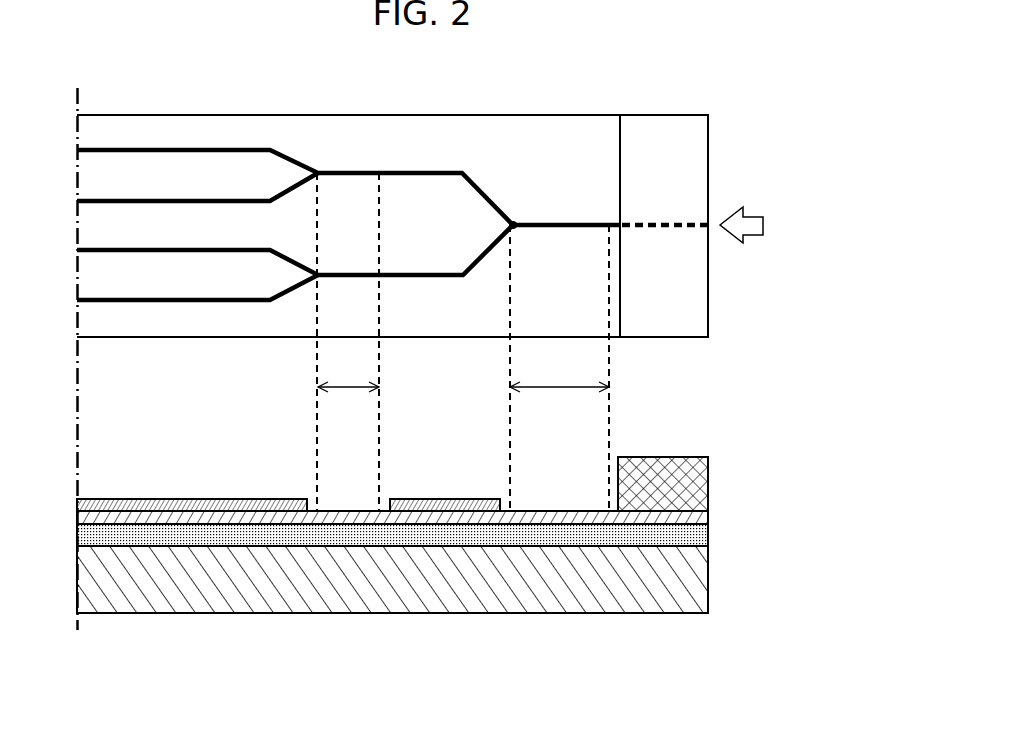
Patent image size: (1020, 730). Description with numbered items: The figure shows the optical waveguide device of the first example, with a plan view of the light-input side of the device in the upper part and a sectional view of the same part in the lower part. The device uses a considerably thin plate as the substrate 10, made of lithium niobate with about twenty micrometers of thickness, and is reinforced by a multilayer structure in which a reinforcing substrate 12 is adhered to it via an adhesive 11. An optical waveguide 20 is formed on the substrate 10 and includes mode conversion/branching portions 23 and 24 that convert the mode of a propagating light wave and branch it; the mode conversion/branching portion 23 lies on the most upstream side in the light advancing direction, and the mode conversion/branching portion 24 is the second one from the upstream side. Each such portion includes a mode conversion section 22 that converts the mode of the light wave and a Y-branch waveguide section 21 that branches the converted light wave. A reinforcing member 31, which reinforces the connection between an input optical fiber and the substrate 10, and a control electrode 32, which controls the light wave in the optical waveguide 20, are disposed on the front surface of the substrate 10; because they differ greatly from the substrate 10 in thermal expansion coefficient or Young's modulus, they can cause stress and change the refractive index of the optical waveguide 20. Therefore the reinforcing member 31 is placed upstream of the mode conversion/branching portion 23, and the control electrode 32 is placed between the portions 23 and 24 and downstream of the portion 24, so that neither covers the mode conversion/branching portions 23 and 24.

The substrate 10 is at (304, 115).
The adhesive 11 is at (708, 540).
The reinforcing substrate 12 is at (708, 578).
The optical waveguide 20 is at (404, 158).
The Y-branch waveguide section 21 is at (517, 211).
The mode conversion section 22 is at (561, 212).
The mode conversion/branching portion 23 is at (559, 371).
The mode conversion/branching portion 24 is at (348, 371).
The reinforcing member 31 is at (672, 125).
The control electrode 32 is at (239, 499).